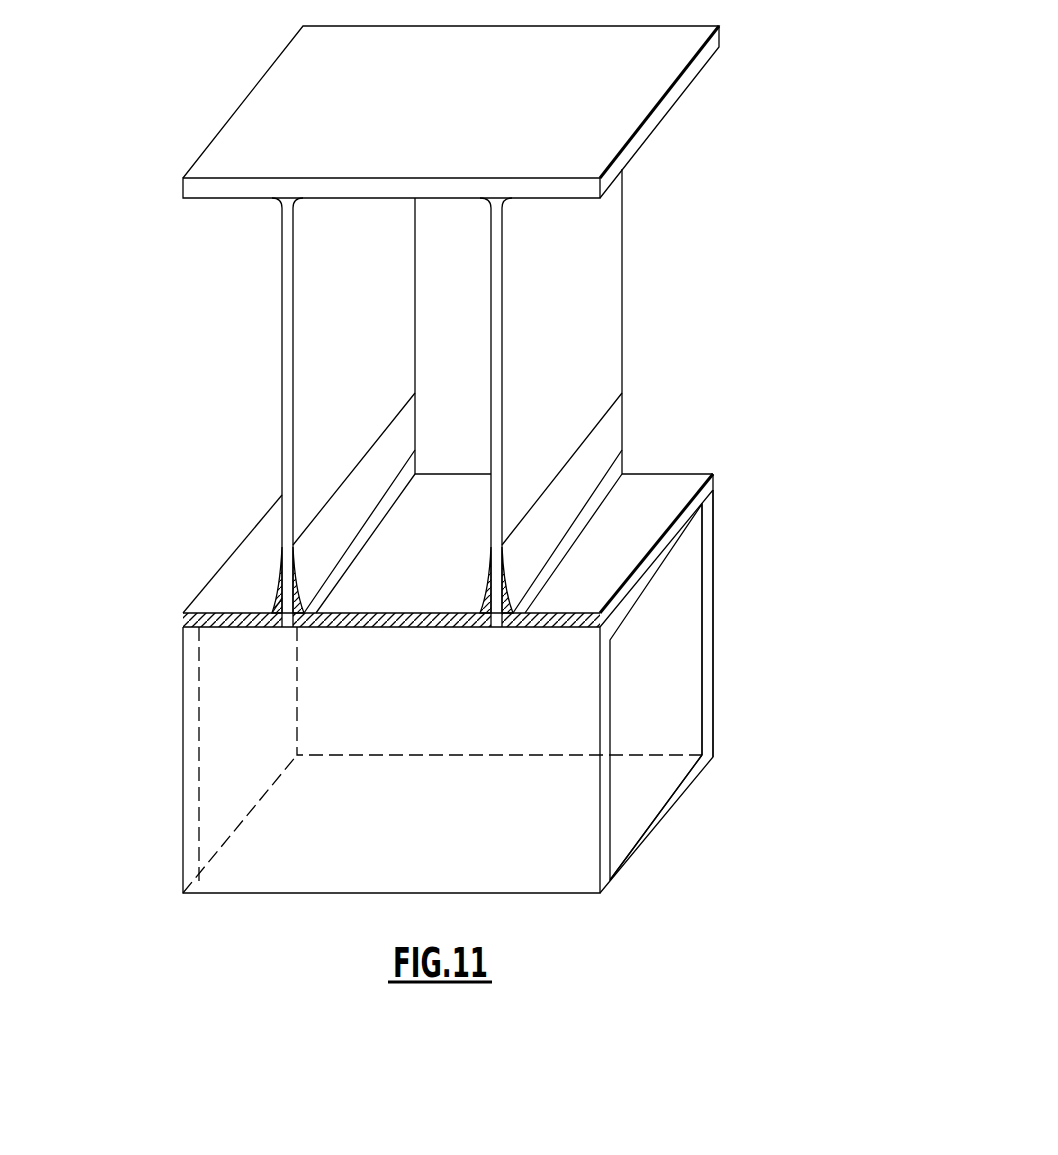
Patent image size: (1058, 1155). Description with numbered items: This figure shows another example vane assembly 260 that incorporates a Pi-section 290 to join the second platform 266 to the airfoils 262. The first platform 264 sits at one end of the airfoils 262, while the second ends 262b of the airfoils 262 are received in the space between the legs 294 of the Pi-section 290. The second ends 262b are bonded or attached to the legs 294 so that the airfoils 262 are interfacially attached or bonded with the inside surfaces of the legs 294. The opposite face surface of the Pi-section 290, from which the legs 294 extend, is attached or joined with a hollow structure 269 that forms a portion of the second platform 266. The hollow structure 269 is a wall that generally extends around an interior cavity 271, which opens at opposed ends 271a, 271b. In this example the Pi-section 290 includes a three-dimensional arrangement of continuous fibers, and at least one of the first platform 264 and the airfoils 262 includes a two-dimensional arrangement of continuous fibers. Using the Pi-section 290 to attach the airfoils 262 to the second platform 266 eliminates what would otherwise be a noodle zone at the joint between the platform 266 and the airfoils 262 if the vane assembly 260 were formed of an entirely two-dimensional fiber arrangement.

The vane assembly 260 is at (432, 460).
The first platform 264 is at (656, 130).
The airfoils 262 is at (443, 398).
The second ends of the airfoils 262b is at (486, 587).
The legs of the Pi-section 294 is at (489, 579).
The Pi-section 290 is at (660, 504).
The second platform 266 is at (457, 692).
The hollow structure 269 is at (714, 717).
The interior cavity 271 is at (678, 672).
The end of the interior cavity 271a is at (652, 790).
The end of the interior cavity 271b is at (209, 791).